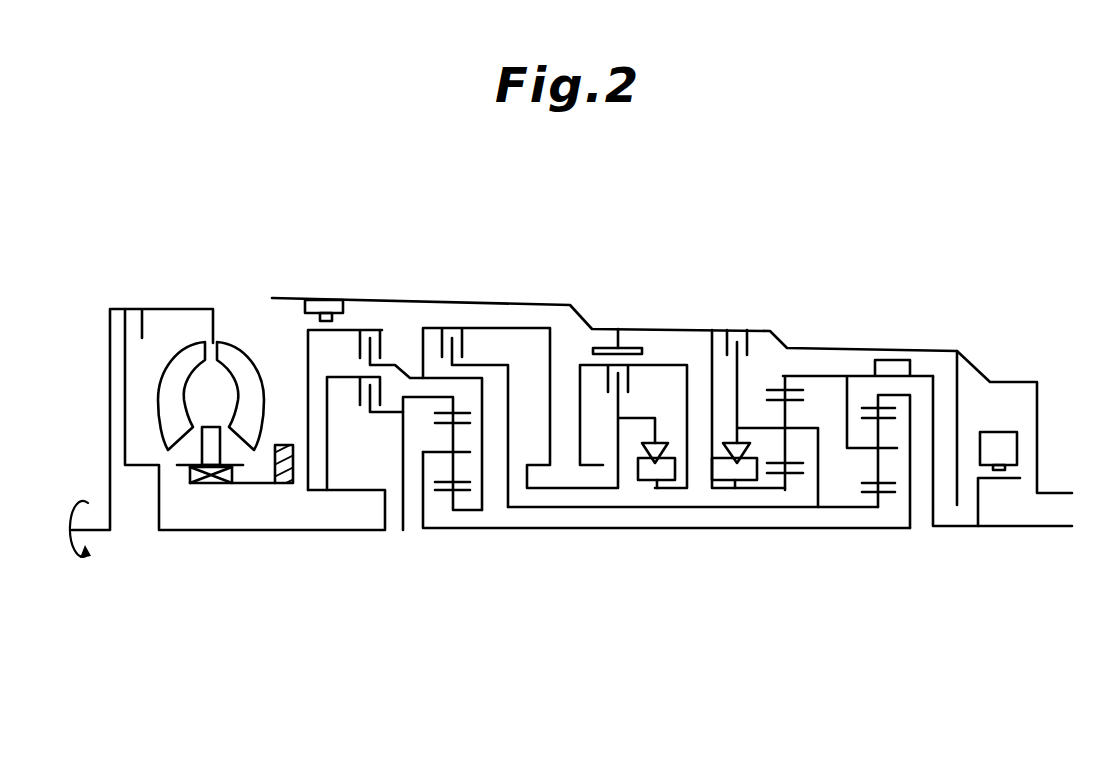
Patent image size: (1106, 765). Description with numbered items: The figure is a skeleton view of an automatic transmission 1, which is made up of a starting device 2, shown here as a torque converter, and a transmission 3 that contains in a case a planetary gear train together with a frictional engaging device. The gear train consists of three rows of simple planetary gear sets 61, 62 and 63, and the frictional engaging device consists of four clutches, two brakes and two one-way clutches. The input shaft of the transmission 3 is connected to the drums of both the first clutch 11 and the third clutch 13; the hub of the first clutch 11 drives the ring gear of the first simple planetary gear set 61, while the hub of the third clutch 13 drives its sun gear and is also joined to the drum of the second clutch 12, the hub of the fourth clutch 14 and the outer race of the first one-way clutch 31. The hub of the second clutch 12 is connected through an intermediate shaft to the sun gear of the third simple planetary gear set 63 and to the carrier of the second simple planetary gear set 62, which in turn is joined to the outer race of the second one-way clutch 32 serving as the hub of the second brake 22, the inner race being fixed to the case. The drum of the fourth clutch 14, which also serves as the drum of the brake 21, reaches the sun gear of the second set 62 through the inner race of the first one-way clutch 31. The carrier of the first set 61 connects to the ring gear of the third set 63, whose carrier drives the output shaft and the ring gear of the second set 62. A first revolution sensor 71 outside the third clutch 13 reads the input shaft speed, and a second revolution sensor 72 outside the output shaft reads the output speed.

The automatic transmission 1 is at (544, 262).
The starting device 2 is at (238, 293).
The transmission 3 is at (713, 315).
The first clutch 11 is at (362, 410).
The second clutch 12 is at (464, 327).
The third clutch 13 is at (380, 325).
The fourth clutch 14 is at (628, 380).
The brake 21 is at (633, 347).
The second brake 22 is at (750, 343).
The first one-way clutch 31 is at (645, 487).
The second one-way clutch 32 is at (733, 487).
The first simple planetary gear set 61 is at (477, 540).
The second simple planetary gear set 62 is at (798, 540).
The third simple planetary gear set 63 is at (892, 540).
The first revolution sensor 71 is at (322, 300).
The second revolution sensor 72 is at (1000, 443).